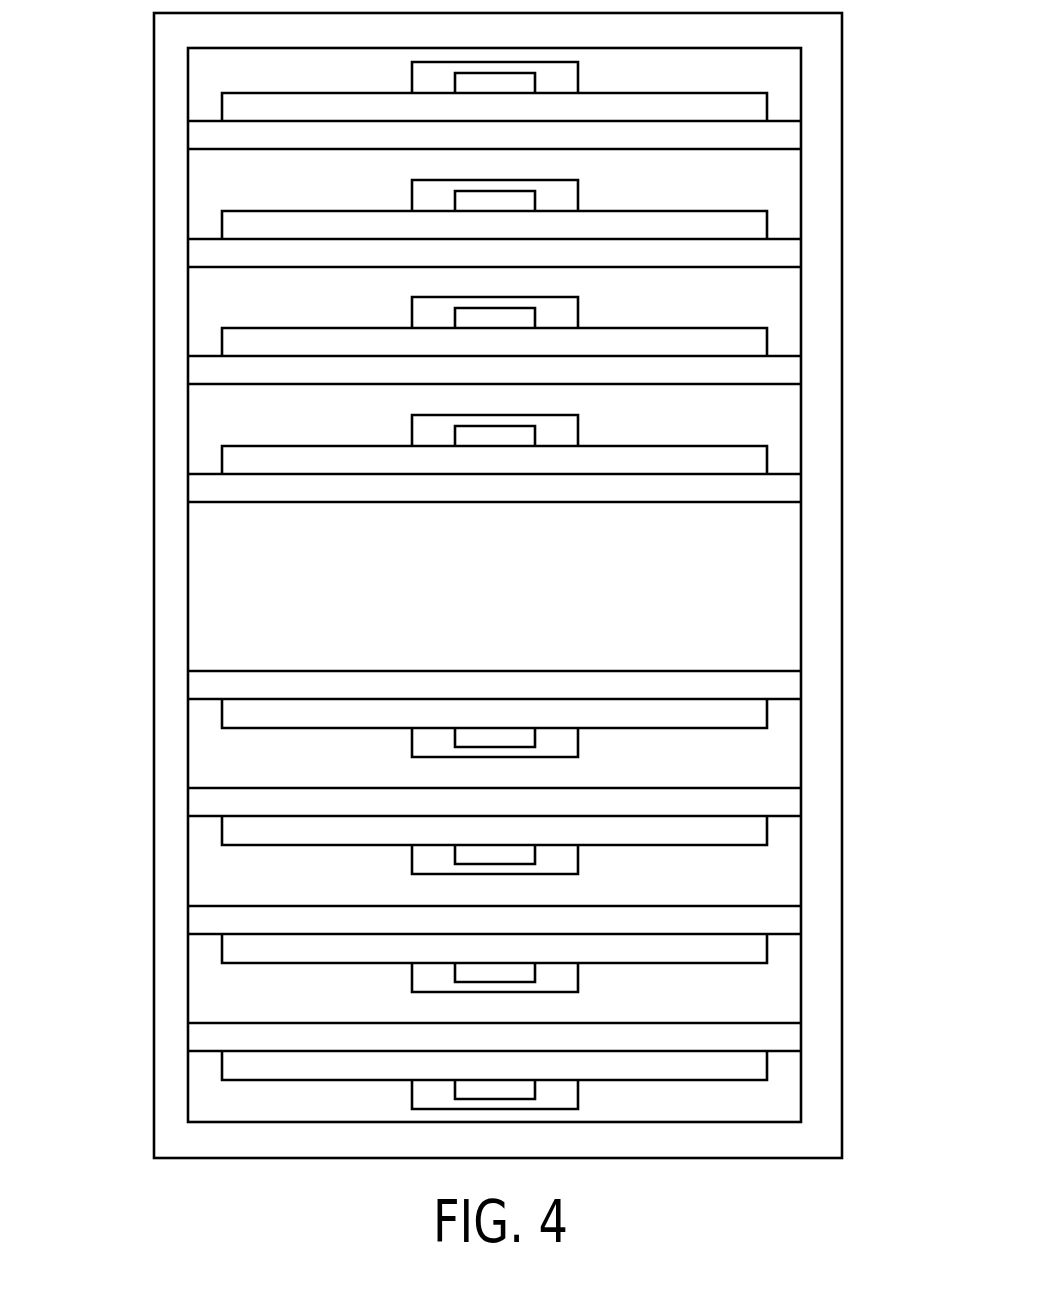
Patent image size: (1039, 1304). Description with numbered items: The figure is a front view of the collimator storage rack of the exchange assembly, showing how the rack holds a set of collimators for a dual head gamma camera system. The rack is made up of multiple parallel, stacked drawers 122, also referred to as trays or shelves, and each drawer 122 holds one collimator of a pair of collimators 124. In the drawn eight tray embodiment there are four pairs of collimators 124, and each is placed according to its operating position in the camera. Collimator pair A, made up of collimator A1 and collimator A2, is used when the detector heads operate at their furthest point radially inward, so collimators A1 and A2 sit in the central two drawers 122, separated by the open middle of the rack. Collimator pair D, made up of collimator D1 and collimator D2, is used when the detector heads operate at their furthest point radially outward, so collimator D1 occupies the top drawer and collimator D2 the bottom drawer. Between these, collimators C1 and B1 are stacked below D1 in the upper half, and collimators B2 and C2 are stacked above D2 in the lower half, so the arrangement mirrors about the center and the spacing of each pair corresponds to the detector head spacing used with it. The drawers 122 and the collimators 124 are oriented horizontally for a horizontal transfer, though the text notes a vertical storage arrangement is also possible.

The drawers 122 is at (572, 585).
The collimators 124 is at (188, 133).
The collimator D1 is at (494, 107).
The collimator C1 is at (494, 225).
The collimator B1 is at (494, 342).
The collimator A1 is at (494, 460).
The collimator A2 is at (494, 713).
The collimator B2 is at (494, 830).
The collimator C2 is at (494, 948).
The collimator D2 is at (494, 1065).